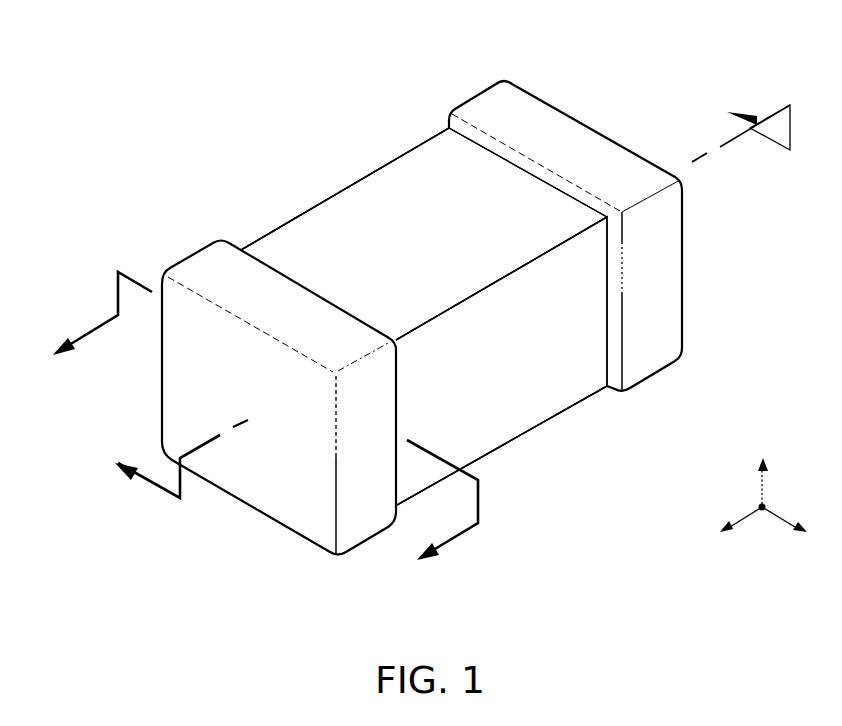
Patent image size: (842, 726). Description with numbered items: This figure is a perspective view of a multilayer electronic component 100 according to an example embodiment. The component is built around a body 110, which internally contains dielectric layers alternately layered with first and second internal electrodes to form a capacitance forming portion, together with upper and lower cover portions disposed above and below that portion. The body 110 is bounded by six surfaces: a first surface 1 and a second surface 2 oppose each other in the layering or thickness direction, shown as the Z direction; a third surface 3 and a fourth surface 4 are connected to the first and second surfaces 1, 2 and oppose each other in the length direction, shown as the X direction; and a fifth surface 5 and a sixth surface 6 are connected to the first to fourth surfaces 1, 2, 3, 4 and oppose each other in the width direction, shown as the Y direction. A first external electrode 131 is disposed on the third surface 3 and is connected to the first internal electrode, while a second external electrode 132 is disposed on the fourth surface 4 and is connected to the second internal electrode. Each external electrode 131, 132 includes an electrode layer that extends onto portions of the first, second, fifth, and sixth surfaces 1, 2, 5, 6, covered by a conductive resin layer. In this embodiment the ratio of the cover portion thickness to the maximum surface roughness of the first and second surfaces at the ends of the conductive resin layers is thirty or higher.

The multilayer electronic component 100 is at (282, 37).
The body 110 is at (437, 157).
The first external electrode 131 is at (180, 402).
The second external electrode 132 is at (496, 103).
The first surface 1 is at (507, 418).
The second surface 2 is at (385, 180).
The third surface 3 is at (246, 500).
The fourth surface 4 is at (664, 259).
The fifth surface 5 is at (576, 392).
The sixth surface 6 is at (335, 207).